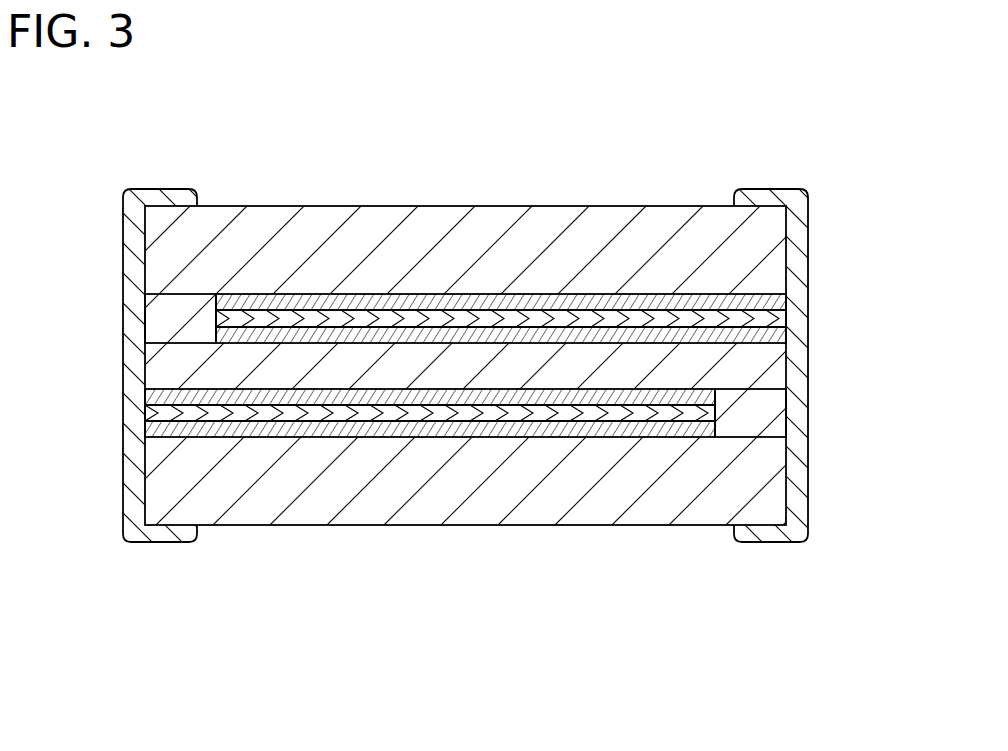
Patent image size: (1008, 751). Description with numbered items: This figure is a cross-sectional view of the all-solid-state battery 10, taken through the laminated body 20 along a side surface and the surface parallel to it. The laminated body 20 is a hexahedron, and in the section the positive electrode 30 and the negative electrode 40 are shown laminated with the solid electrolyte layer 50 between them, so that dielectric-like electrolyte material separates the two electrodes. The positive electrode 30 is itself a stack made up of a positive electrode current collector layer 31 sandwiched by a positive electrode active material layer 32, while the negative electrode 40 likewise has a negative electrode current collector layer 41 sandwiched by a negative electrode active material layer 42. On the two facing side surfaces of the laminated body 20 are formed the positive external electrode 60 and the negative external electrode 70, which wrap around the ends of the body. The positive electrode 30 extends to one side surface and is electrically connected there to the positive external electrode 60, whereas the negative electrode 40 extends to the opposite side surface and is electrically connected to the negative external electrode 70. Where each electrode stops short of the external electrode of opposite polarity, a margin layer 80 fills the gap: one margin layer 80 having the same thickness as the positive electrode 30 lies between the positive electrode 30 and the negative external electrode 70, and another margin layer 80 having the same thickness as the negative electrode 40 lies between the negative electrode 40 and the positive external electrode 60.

The all-solid-state battery 10 is at (586, 127).
The laminated body 20 is at (305, 206).
The positive electrode 30 is at (57, 362).
The positive electrode current collector layer 31 is at (150, 414).
The positive electrode active material layer 32 is at (147, 397).
The negative electrode 40 is at (870, 265).
The negative electrode current collector layer 41 is at (787, 319).
The negative electrode active material layer 42 is at (787, 301).
The solid electrolyte layer 50 is at (481, 250).
The positive external electrode 60 is at (135, 254).
The negative external electrode 70 is at (796, 466).
The margin layer 80 is at (177, 320).